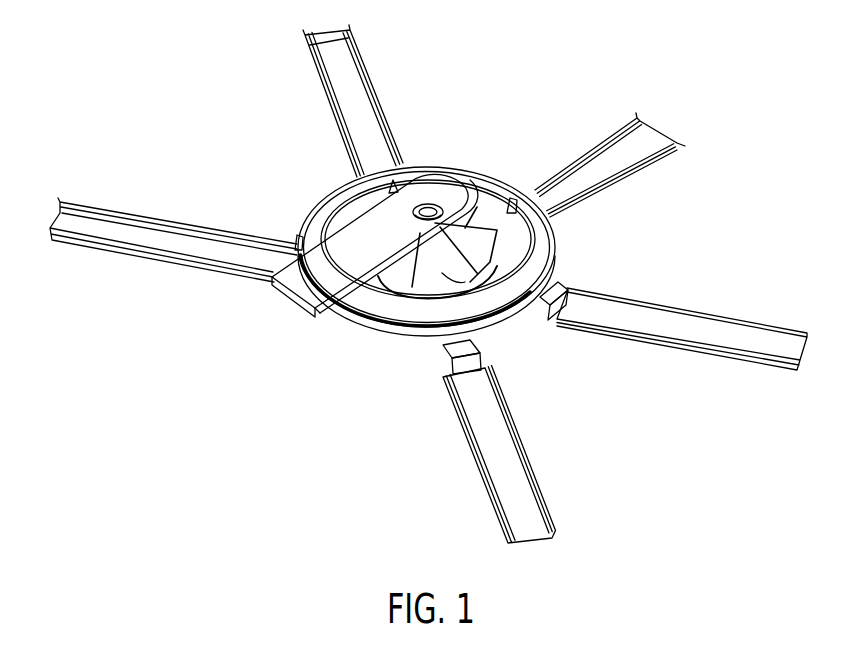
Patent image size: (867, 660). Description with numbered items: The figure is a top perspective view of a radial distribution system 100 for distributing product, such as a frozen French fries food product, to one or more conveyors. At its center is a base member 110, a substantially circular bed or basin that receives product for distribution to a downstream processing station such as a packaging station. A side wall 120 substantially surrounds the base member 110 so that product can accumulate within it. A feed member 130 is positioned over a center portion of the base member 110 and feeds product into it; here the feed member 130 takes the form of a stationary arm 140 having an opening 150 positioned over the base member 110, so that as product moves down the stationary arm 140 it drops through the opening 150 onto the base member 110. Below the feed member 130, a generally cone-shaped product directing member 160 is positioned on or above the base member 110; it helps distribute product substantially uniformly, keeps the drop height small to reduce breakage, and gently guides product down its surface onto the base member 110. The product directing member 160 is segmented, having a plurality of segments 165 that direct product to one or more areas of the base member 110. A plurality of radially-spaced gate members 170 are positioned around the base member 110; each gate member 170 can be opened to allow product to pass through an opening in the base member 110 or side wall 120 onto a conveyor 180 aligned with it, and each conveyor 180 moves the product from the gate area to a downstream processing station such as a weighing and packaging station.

The radial distribution system 100 is at (322, 423).
The base member 110 is at (405, 322).
The side wall 120 is at (556, 251).
The feed member 130 is at (360, 246).
The stationary arm 140 is at (321, 318).
The opening 150 is at (430, 208).
The product directing member 160 is at (482, 215).
The segments 165 is at (477, 250).
The gate members 170 is at (547, 311).
The conveyor 180 is at (323, 86).